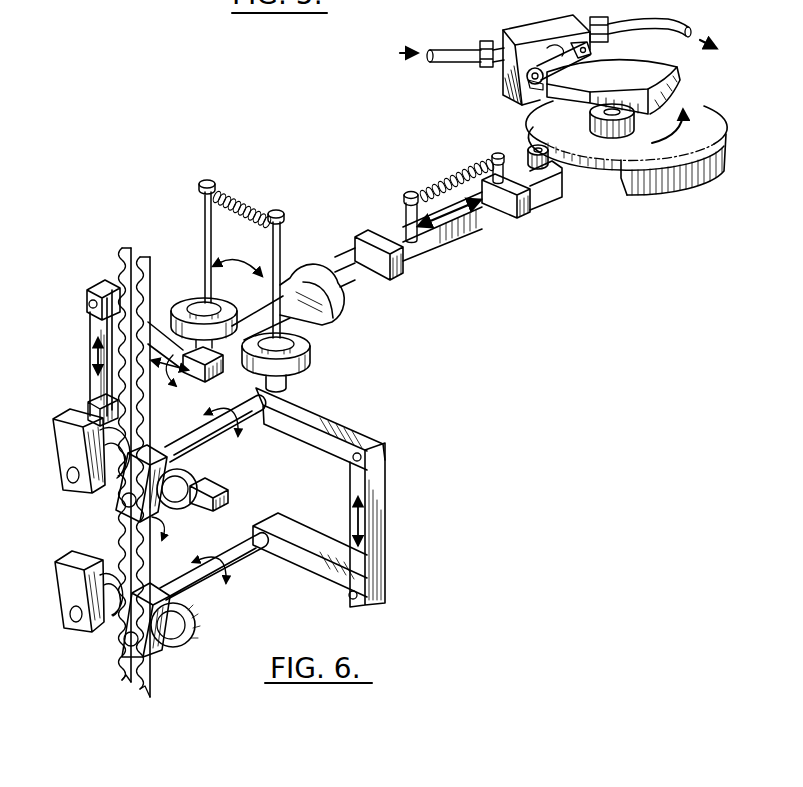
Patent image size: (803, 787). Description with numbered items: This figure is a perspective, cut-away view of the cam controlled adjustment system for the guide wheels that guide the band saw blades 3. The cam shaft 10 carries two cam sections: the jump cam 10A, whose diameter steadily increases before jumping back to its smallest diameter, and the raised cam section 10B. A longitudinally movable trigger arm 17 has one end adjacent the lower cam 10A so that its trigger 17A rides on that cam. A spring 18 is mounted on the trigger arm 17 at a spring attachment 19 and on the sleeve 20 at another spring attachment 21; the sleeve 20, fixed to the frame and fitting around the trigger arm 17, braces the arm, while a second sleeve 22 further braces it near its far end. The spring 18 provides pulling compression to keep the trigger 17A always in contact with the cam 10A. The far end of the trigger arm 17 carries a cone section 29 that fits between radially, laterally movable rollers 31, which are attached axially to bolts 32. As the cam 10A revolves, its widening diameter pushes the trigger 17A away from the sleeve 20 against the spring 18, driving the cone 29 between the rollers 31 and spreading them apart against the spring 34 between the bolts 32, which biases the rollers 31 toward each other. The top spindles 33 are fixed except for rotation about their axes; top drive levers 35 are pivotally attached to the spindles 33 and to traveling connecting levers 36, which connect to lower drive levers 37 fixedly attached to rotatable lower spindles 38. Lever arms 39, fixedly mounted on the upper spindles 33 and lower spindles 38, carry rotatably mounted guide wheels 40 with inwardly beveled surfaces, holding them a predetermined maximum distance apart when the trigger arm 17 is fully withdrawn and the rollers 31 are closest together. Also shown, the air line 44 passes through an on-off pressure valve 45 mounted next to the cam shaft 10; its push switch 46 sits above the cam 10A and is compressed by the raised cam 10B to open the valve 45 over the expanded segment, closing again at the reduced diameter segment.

The band saw blades 3 is at (140, 268).
The cam shaft 10 is at (592, 115).
The jump cam 10A is at (608, 152).
The cam section 10B is at (660, 71).
The trigger arm 17 is at (452, 238).
The trigger 17A is at (530, 148).
The spring 18 is at (440, 186).
The spring attachment 19 is at (407, 192).
The sleeve 20 is at (525, 212).
The spring attachment 21 is at (490, 156).
The sleeve 22 is at (367, 230).
The cone section 29 is at (334, 310).
The rollers 31 is at (300, 340).
The bolts 32 is at (202, 228).
The top spindles 33 is at (243, 417).
The spring 34 is at (248, 203).
The top drive levers 35 is at (90, 302).
The connecting levers 36 is at (95, 330).
The lower drive levers 37 is at (328, 555).
The lower spindles 38 is at (247, 562).
The lever arms 39 is at (67, 437).
The guide wheels 40 is at (100, 395).
The air line 44 is at (455, 50).
The on-off pressure valve 45 is at (548, 25).
The push on-off switch 46 is at (530, 80).